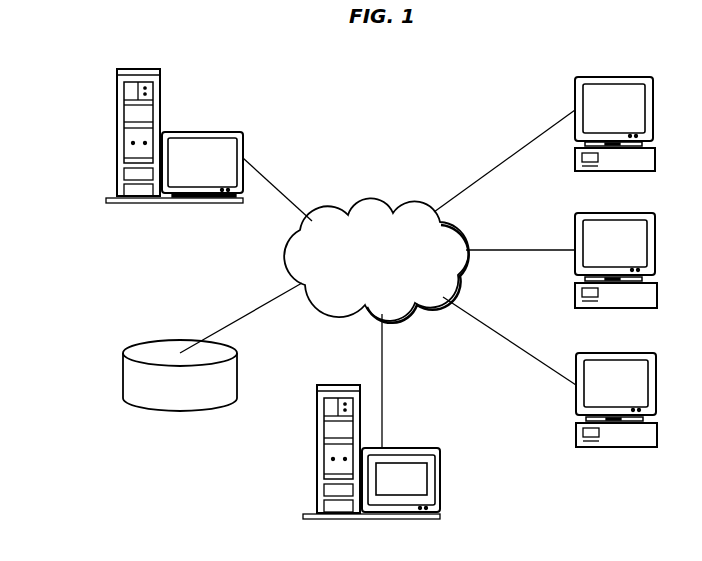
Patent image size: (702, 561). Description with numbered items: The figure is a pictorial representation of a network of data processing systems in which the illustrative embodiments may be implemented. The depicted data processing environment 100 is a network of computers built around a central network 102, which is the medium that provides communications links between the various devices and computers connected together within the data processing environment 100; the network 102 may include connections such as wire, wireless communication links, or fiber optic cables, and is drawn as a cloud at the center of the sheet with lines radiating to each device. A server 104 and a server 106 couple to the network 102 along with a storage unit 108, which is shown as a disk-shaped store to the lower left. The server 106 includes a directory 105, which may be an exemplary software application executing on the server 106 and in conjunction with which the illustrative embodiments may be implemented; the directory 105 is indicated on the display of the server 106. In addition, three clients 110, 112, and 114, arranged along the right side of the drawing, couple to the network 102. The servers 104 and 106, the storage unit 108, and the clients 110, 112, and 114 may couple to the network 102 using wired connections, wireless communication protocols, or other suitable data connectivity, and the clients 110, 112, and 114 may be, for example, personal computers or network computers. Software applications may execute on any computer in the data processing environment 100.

The data processing environment 100 is at (65, 90).
The network 102 is at (367, 274).
The server 104 is at (218, 222).
The directory 105 is at (428, 480).
The server 106 is at (424, 461).
The storage unit 108 is at (167, 408).
The client 110 is at (657, 322).
The client 112 is at (657, 462).
The client 114 is at (656, 186).